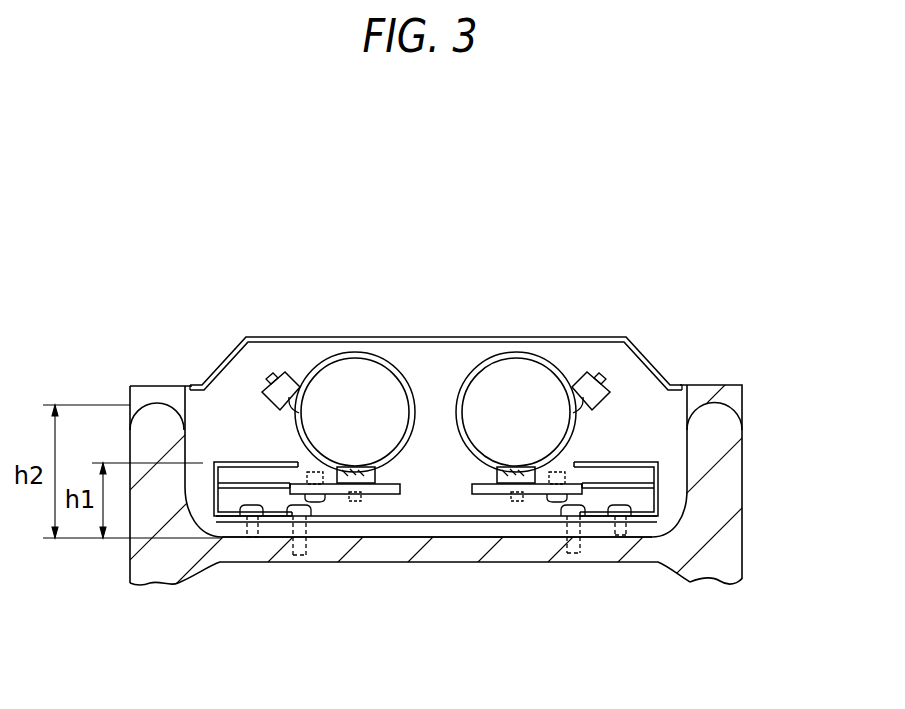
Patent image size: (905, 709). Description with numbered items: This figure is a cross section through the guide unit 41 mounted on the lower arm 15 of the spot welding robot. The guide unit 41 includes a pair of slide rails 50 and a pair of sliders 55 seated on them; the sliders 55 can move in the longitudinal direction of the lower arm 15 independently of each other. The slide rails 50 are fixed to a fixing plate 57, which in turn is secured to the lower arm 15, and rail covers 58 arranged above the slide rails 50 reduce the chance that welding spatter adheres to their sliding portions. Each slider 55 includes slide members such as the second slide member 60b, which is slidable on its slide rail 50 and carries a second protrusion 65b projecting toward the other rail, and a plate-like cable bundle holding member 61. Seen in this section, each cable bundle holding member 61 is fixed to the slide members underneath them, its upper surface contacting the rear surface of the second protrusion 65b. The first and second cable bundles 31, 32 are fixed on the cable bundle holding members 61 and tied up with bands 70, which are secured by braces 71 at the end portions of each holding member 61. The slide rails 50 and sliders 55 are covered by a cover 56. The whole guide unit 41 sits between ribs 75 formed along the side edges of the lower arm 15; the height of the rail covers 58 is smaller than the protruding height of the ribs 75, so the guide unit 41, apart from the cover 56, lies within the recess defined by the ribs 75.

The guide unit 41 is at (205, 257).
The lower arm 15 is at (726, 506).
The first cable bundle 31 is at (355, 372).
The second cable bundle 32 is at (512, 372).
The slide rail 50 is at (233, 517).
The slider 55 is at (332, 507).
The cover 56 is at (429, 337).
The fixing plate 57 is at (397, 522).
The rail cover 58 is at (220, 462).
The second slide member 60b is at (262, 478).
The cable bundle holding member 61 is at (385, 494).
The second protrusion 65b is at (253, 516).
The band 70 is at (289, 383).
The brace 71 is at (410, 478).
The rib 75 is at (150, 421).